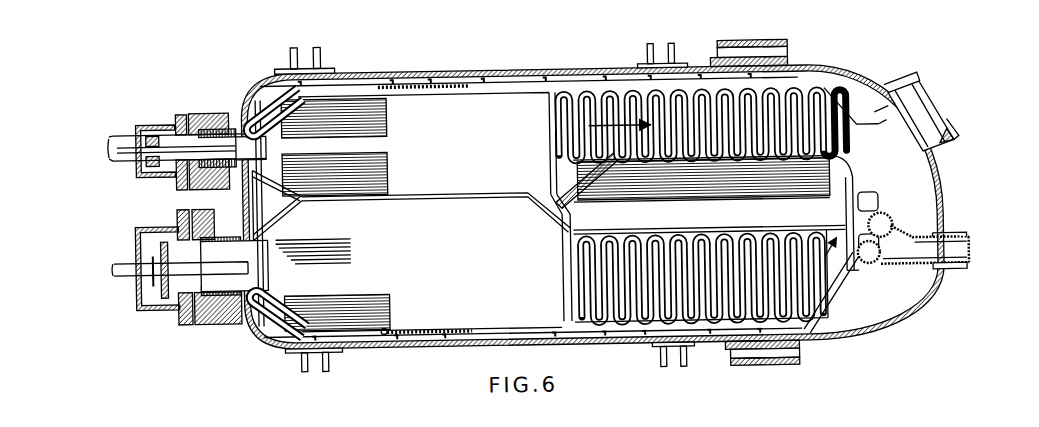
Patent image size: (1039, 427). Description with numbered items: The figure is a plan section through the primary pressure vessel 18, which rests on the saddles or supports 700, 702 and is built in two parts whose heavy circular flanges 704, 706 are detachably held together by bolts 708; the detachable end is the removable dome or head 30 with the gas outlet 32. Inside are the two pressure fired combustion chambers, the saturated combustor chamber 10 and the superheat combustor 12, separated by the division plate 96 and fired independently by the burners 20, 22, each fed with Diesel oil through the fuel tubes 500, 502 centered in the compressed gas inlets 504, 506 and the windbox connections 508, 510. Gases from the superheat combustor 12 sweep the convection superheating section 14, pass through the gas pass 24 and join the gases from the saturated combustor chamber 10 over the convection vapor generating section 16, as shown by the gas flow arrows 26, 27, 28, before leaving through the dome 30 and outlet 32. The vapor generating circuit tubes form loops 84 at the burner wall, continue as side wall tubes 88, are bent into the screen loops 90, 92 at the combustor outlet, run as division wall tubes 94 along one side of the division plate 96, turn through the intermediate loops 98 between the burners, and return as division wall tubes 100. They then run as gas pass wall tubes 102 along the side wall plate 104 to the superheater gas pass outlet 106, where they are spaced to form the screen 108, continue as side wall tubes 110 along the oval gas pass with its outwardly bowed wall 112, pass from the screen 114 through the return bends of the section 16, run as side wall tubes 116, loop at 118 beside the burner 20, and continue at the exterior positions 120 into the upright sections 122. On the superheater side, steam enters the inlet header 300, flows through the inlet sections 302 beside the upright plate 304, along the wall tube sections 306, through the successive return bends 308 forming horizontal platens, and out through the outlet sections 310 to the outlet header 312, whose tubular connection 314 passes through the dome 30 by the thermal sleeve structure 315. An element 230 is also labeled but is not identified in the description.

The saturated combustor chamber 10 is at (390, 181).
The superheat combustor 12 is at (402, 307).
The convection superheating section 14 is at (714, 324).
The convection vapor generating section 16 is at (660, 108).
The primary pressure vessel 18 is at (517, 71).
The burner 20 is at (166, 128).
The burner 22 is at (169, 285).
The gas pass 24 is at (757, 217).
The gas flow arrow 26 is at (724, 212).
The gas flow arrow 27 is at (552, 140).
The gas flow arrow 28 is at (590, 120).
The removable dome 30 is at (862, 83).
The gas outlet 32 is at (918, 126).
The circuit tube loops 84 is at (275, 302).
The side wall tubes 88 is at (380, 333).
The screen loop 90 is at (561, 263).
The screen loop 92 is at (580, 251).
The combustor division wall tubes 94 is at (371, 198).
The division plate 96 is at (275, 192).
The intermediate loops 98 is at (262, 207).
The division wall tubes 100 is at (411, 198).
The gas pass wall tubes 102 is at (628, 231).
The gas pass side wall plate 104 is at (650, 230).
The superheater gas pass outlet 106 is at (866, 270).
The screen 108 is at (828, 236).
The side wall tubes 110 is at (823, 161).
The outwardly bowed wall 112 is at (828, 181).
The screen 114 is at (570, 201).
The side wall tubes 116 is at (776, 93).
The loops 118 is at (258, 118).
The exterior tube positions 120 is at (337, 80).
The upright tube sections 122 is at (428, 84).
The lower beaded liner strip 230 is at (455, 333).
The superheater inlet header 300 is at (878, 266).
The superheater tube inlet sections 302 is at (838, 311).
The upright metal plate 304 is at (860, 258).
The superheater wall tube sections 306 is at (790, 318).
The superheater return bends 308 is at (620, 323).
The platen outlet section 310 is at (882, 219).
The superheater outlet header 312 is at (892, 229).
The tubular outlet connection 314 is at (952, 258).
The thermal sleeve structure 315 is at (950, 246).
The fuel tube 500 is at (120, 255).
The fuel tube 502 is at (125, 146).
The compressed gas inlet 504 is at (220, 276).
The compressed gas inlet 506 is at (213, 128).
The windbox connection 508 is at (166, 305).
The windbox connection 510 is at (140, 121).
The saddle support 700 is at (316, 368).
The saddle support 702 is at (673, 357).
The circular flange 704 is at (727, 49).
The circular flange 706 is at (762, 47).
The bolts 708 is at (706, 417).